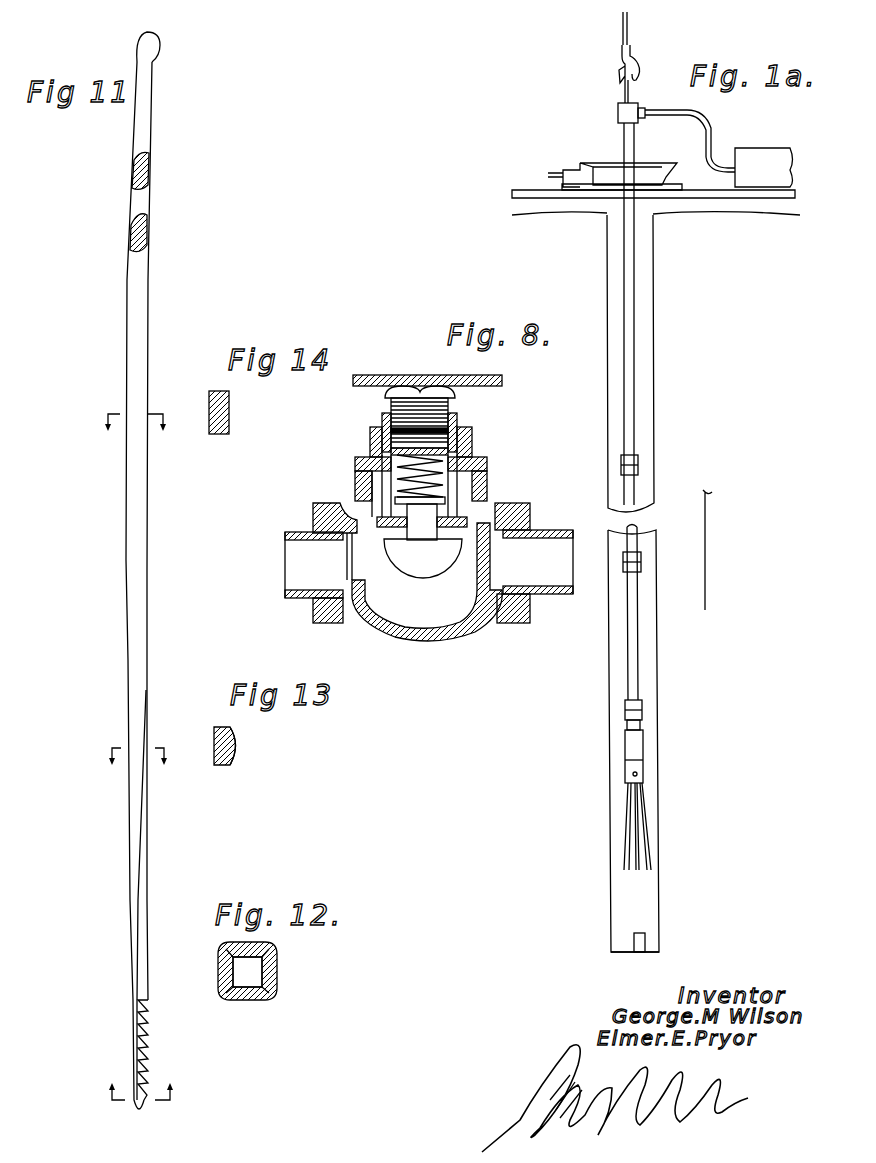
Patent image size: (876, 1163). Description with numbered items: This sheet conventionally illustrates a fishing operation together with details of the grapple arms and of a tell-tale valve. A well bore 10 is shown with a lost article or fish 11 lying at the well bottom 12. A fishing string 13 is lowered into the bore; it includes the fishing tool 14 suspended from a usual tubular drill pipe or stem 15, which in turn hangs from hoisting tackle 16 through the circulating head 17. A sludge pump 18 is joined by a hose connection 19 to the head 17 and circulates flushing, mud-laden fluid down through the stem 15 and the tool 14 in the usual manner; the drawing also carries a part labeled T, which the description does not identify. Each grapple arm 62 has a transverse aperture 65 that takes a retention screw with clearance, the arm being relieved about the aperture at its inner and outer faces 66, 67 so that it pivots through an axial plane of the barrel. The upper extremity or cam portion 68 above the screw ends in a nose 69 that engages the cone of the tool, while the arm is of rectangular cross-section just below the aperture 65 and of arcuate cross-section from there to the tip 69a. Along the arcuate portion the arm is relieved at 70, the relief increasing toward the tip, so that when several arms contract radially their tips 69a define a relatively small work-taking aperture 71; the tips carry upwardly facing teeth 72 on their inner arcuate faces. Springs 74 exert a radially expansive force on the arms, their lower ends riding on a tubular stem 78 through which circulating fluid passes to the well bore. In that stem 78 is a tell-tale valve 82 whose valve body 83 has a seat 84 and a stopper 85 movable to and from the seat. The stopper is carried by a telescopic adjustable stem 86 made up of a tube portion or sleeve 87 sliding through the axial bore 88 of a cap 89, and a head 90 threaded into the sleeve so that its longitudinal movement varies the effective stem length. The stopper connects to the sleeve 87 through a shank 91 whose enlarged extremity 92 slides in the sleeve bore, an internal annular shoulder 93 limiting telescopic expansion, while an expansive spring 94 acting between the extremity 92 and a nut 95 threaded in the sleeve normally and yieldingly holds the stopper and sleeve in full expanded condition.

In FIG. 1A, the well bore 10 is at (650, 447).
In FIG. 1A, the lost article or fish 11 is at (646, 943).
In FIG. 11, the well bottom 12 is at (143, 1101).
In FIG. 1A, the well bottom 12 is at (622, 953).
In FIG. 11, the fishing string 13 is at (139, 746).
In FIG. 1A, the fishing string 13 is at (632, 417).
In FIG. 11, the fishing tool 14 is at (134, 413).
In FIG. 1A, the fishing tool 14 is at (636, 755).
In FIG. 1A, the tubular drill pipe or stem 15 is at (635, 600).
In FIG. 1A, the hoisting tackle 16 is at (640, 58).
In FIG. 1A, the circulating head 17 is at (638, 108).
In FIG. 1A, the sludge pump 18 is at (764, 167).
In FIG. 1A, the hose connection 19 is at (713, 128).
In FIG. 1A, the tank T is at (650, 158).
In FIG. 11, the grapple arm 62 is at (140, 530).
In FIG. 14, the grapple arm 62 is at (230, 411).
In FIG. 13, the grapple arm 62 is at (237, 753).
In FIG. 11, the transverse aperture 65 is at (142, 204).
In FIG. 11, the inner face 66 is at (153, 177).
In FIG. 11, the outer face 67 is at (132, 187).
In FIG. 11, the upper extremity or cam portion 68 is at (145, 116).
In FIG. 11, the nose 69 is at (161, 47).
In FIG. 11, the tip 69a is at (134, 1030).
In FIG. 12, the tip 69a is at (278, 963).
In FIG. 11, the relief 70 is at (146, 895).
In FIG. 13, the relief 70 is at (233, 731).
In FIG. 12, the relief 70 is at (264, 945).
In FIG. 12, the work-taking aperture 71 is at (250, 975).
In FIG. 11, the upwardly facing teeth 72 is at (150, 1050).
In FIG. 12, the upwardly facing teeth 72 is at (218, 958).
In FIG. 8, the spring 74 is at (372, 374).
In FIG. 8, the stem 78 is at (298, 582).
In FIG. 8, the tell-tale valve 82 is at (437, 648).
In FIG. 8, the valve body 83 is at (483, 630).
In FIG. 8, the seat 84 is at (448, 576).
In FIG. 8, the stopper 85 is at (423, 558).
In FIG. 8, the telescopic adjustable stem 86 is at (458, 420).
In FIG. 8, the tube portion or sleeve 87 is at (470, 463).
In FIG. 8, the axial bore 88 is at (382, 437).
In FIG. 8, the cap 89 is at (472, 433).
In FIG. 8, the head 90 is at (456, 393).
In FIG. 8, the shank 91 is at (422, 522).
In FIG. 8, the enlarged extremity 92 is at (383, 505).
In FIG. 8, the internal annular shoulder 93 is at (337, 513).
In FIG. 8, the expansive spring 94 is at (372, 468).
In FIG. 8, the nut 95 is at (488, 470).